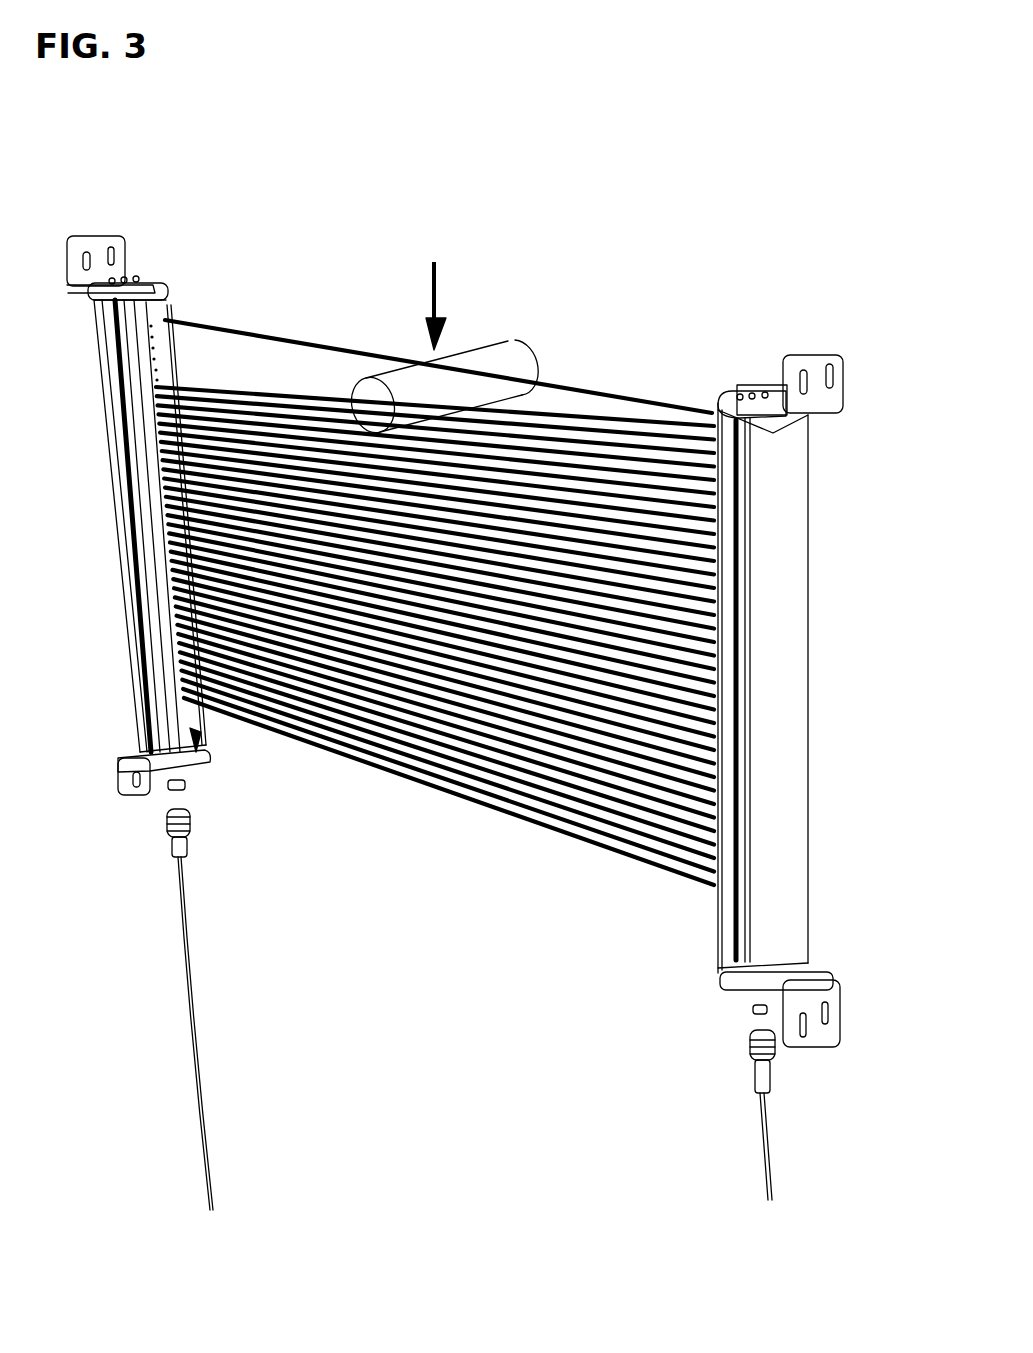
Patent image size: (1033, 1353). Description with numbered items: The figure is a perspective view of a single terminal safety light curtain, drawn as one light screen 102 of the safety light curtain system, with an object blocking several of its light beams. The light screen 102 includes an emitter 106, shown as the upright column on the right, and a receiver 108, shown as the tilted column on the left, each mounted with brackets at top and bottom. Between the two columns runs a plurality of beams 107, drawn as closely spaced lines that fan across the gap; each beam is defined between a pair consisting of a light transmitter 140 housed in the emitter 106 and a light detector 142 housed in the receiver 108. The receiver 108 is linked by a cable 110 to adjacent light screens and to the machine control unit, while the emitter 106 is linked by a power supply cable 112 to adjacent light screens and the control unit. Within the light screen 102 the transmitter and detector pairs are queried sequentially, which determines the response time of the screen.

The light screen 102 is at (322, 232).
The emitter 106 is at (785, 725).
The beam 107 is at (327, 347).
The receiver 108 is at (135, 355).
The cable 110 is at (210, 1065).
The power supply cable 112 is at (770, 1130).
The light transmitter 140 is at (702, 425).
The light detector 142 is at (150, 340).